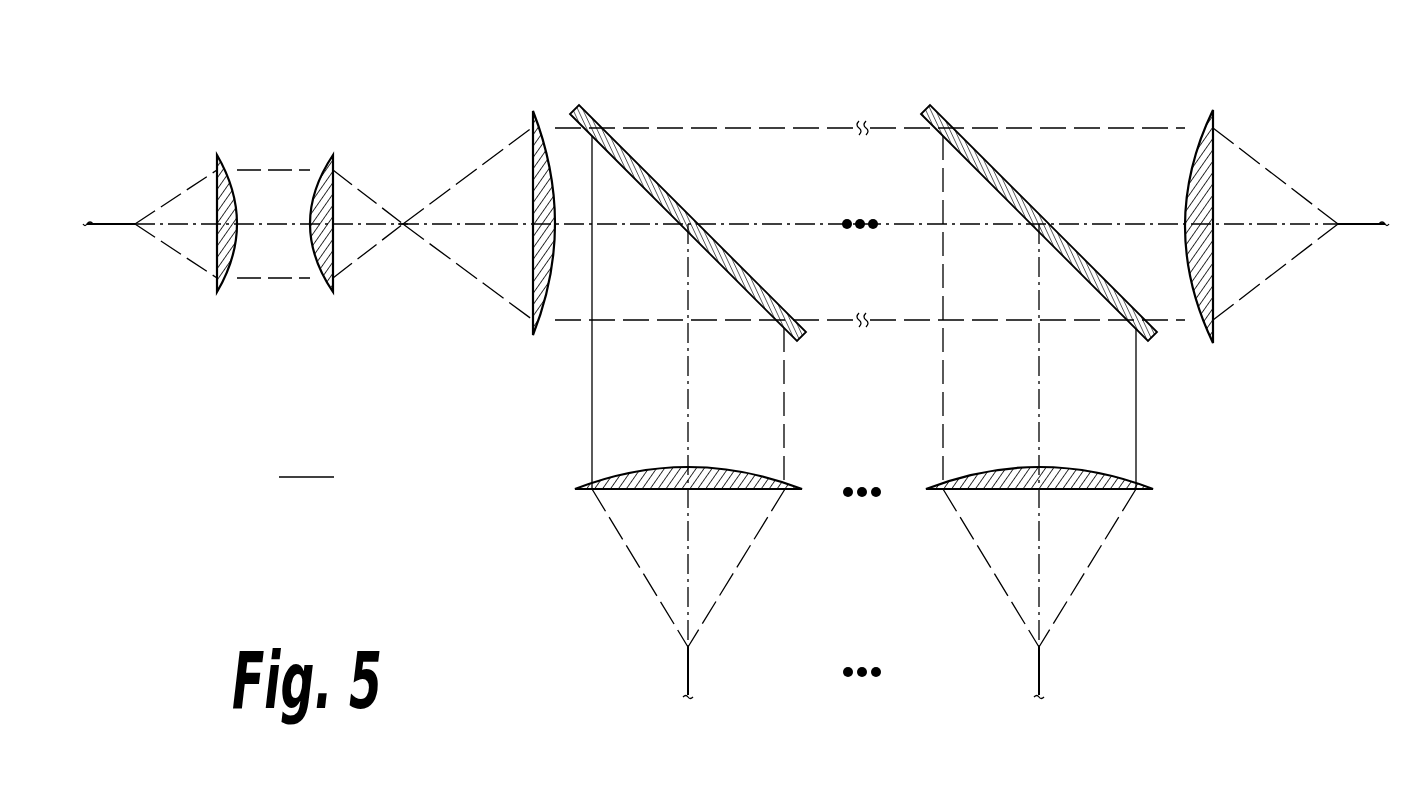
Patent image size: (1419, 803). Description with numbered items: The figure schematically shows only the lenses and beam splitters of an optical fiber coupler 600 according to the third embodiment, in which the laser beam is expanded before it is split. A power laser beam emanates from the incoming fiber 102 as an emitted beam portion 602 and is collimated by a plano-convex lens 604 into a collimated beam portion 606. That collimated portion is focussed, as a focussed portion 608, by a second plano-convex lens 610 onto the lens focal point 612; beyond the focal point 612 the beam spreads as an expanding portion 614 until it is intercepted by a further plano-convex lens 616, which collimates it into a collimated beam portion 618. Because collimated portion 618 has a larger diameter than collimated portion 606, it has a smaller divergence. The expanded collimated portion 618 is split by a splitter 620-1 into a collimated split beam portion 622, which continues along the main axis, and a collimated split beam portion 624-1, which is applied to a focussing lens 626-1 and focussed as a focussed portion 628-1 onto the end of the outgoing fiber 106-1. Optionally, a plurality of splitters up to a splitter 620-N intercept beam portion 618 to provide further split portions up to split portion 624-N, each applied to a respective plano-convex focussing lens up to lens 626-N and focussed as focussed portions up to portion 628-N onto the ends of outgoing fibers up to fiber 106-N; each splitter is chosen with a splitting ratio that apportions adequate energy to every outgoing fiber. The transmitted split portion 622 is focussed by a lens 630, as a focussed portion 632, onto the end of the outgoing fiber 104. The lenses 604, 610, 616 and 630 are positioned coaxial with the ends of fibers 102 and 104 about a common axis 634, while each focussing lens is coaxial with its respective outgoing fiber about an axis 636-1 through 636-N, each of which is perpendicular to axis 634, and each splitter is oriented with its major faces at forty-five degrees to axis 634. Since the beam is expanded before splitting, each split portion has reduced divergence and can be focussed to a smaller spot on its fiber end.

The coupler 600 is at (307, 460).
The incoming fiber 102 is at (110, 224).
The outgoing fiber 104 is at (1358, 224).
The outgoing fiber 106-1 is at (688, 672).
The outgoing fiber 106-N is at (1039, 677).
The emitted beam portion 602 is at (178, 196).
The plano-convex lens 604 is at (227, 157).
The collimated beam portion 606 is at (270, 170).
The focussed portion 608 is at (365, 195).
The plano-convex lens 610 is at (338, 157).
The lens focal point 612 is at (404, 222).
The expanding portion 614 is at (485, 163).
The plano-convex lens 616 is at (540, 118).
The collimated beam portion 618 is at (562, 125).
The splitter 620-1 is at (655, 175).
The splitter 620-N is at (945, 118).
The collimated split beam portion 622 is at (840, 128).
The collimated split beam portion 624-1 is at (592, 423).
The collimated split beam portion 624-N is at (1135, 423).
The focussing lens 626-1 is at (592, 487).
The focussing lens 626-N is at (1150, 487).
The focussed portion 628-1 is at (635, 567).
The focussed portion 628-N is at (1082, 577).
The lens 630 is at (1210, 112).
The focussed portion 632 is at (1265, 168).
The axis 634 is at (450, 259).
The axis 636-1 is at (688, 380).
The axis 636-N is at (1039, 380).